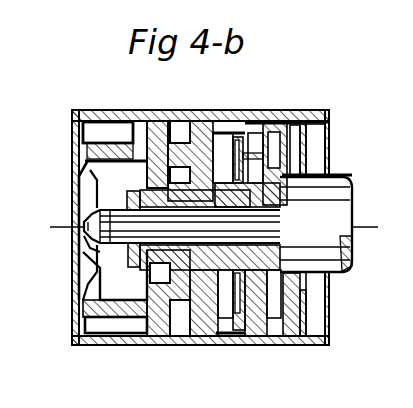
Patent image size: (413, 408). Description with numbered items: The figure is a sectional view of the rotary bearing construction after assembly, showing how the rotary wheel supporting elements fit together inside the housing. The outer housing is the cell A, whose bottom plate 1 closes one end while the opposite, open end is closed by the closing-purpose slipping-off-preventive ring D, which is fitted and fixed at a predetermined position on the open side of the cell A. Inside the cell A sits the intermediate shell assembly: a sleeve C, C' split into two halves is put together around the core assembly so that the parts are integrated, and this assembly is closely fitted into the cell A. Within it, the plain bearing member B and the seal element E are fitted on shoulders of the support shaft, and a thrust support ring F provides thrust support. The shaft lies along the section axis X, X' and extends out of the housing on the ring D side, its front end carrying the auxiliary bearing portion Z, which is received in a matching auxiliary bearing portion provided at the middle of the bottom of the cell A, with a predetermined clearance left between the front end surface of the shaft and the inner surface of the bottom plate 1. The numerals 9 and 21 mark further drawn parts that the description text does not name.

The bottom plate 1 is at (76, 215).
The hub cap 9 is at (357, 194).
The retaining member 21 is at (318, 129).
The cell A is at (274, 120).
The bearing member B is at (137, 167).
The sleeve C is at (191, 137).
The sleeve C' is at (179, 319).
The closing-purpose slipping-off-preventive ring D is at (308, 150).
The seal element E is at (255, 326).
The thrust support ring F is at (162, 260).
The axis end X is at (56, 231).
The axis end X' is at (377, 231).
The auxiliary bearing portion Z is at (80, 247).